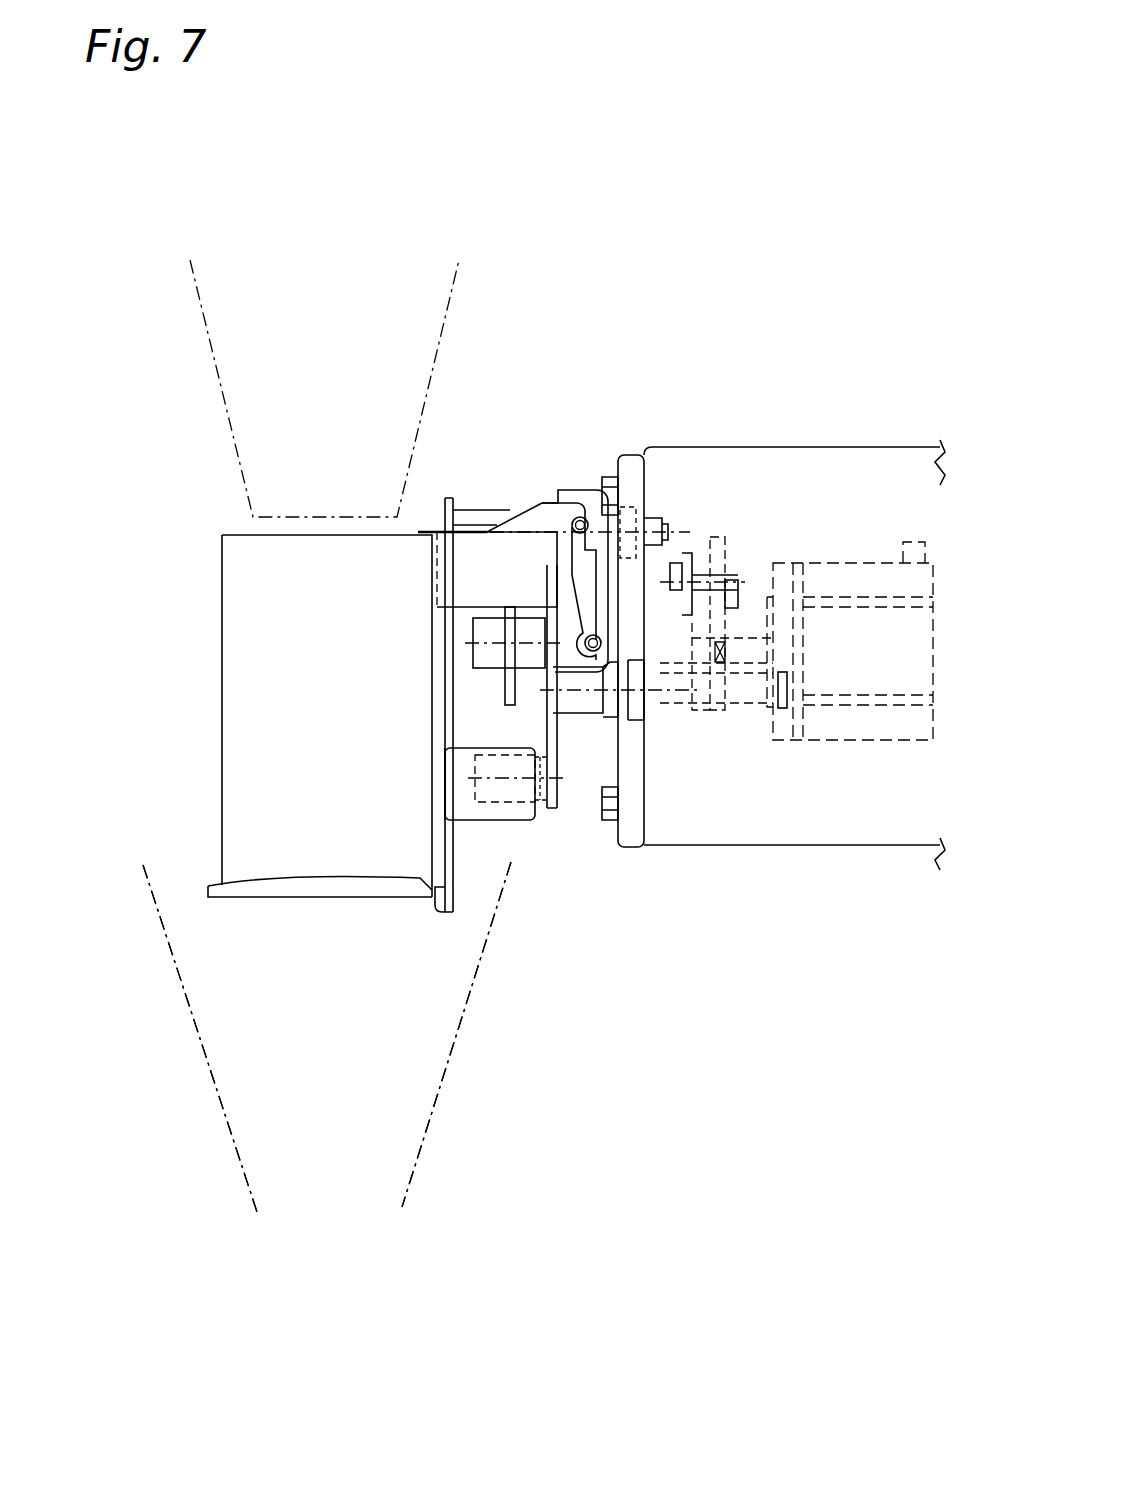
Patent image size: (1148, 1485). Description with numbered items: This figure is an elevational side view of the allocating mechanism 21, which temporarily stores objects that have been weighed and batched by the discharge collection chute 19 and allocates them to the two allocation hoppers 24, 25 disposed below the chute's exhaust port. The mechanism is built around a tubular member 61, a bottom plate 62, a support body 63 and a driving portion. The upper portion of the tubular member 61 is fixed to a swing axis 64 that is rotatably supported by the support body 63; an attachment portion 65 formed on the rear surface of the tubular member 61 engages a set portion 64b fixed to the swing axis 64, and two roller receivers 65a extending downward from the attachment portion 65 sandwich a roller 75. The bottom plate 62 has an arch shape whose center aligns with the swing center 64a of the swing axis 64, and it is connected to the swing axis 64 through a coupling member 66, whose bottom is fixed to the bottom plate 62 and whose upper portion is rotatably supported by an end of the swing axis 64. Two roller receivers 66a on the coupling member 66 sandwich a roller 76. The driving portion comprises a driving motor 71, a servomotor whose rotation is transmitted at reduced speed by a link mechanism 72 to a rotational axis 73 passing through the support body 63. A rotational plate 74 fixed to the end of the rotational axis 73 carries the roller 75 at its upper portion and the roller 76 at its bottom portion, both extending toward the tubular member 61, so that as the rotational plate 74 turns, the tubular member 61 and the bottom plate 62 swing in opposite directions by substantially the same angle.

The discharge collection chute 19 is at (450, 310).
The allocating mechanism 21 is at (742, 560).
The allocation hopper 24 is at (427, 1130).
The allocation hopper 25 is at (327, 1038).
The tubular member 61 is at (222, 755).
The bottom plate 62 is at (287, 897).
The support body 63 is at (620, 450).
The swing axis 64 is at (473, 497).
The swing center 64a is at (675, 523).
The set portion 64b is at (573, 497).
The attachment portion 65 is at (458, 565).
The roller receivers 65a is at (500, 683).
The coupling member 66 is at (443, 912).
The roller receivers 66a is at (457, 803).
The driving motor 71 is at (847, 740).
The link mechanism 72 is at (705, 727).
The rotational axis 73 is at (577, 710).
The rotational plate 74 is at (563, 803).
The roller 75 is at (488, 630).
The roller 76 is at (487, 757).